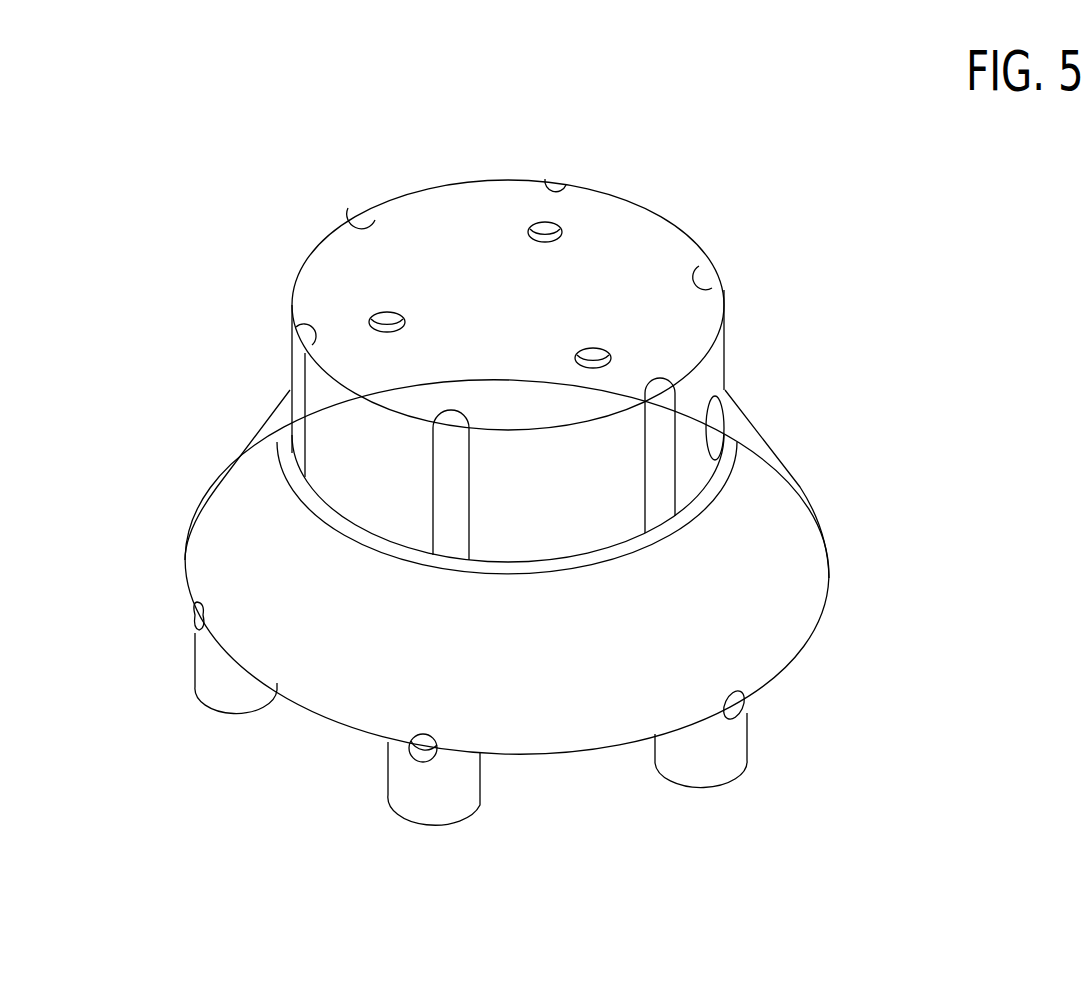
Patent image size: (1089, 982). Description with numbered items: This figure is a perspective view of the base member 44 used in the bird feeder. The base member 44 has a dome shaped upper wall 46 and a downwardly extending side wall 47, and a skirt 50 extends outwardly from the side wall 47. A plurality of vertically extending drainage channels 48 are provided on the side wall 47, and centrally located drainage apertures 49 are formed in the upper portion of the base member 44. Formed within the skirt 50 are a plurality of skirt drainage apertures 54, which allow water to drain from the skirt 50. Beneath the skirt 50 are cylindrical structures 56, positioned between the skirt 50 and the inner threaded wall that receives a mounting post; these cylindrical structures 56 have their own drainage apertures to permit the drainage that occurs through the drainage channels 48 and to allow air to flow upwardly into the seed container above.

The base member 44 is at (275, 137).
The dome shaped upper wall 46 is at (580, 318).
The side wall 47 is at (713, 375).
The drainage channels 48 is at (723, 272).
The centrally located drainage apertures 49 is at (550, 222).
The skirt 50 is at (805, 497).
The skirt drainage apertures 54 is at (192, 615).
The cylindrical structures 56 is at (473, 807).